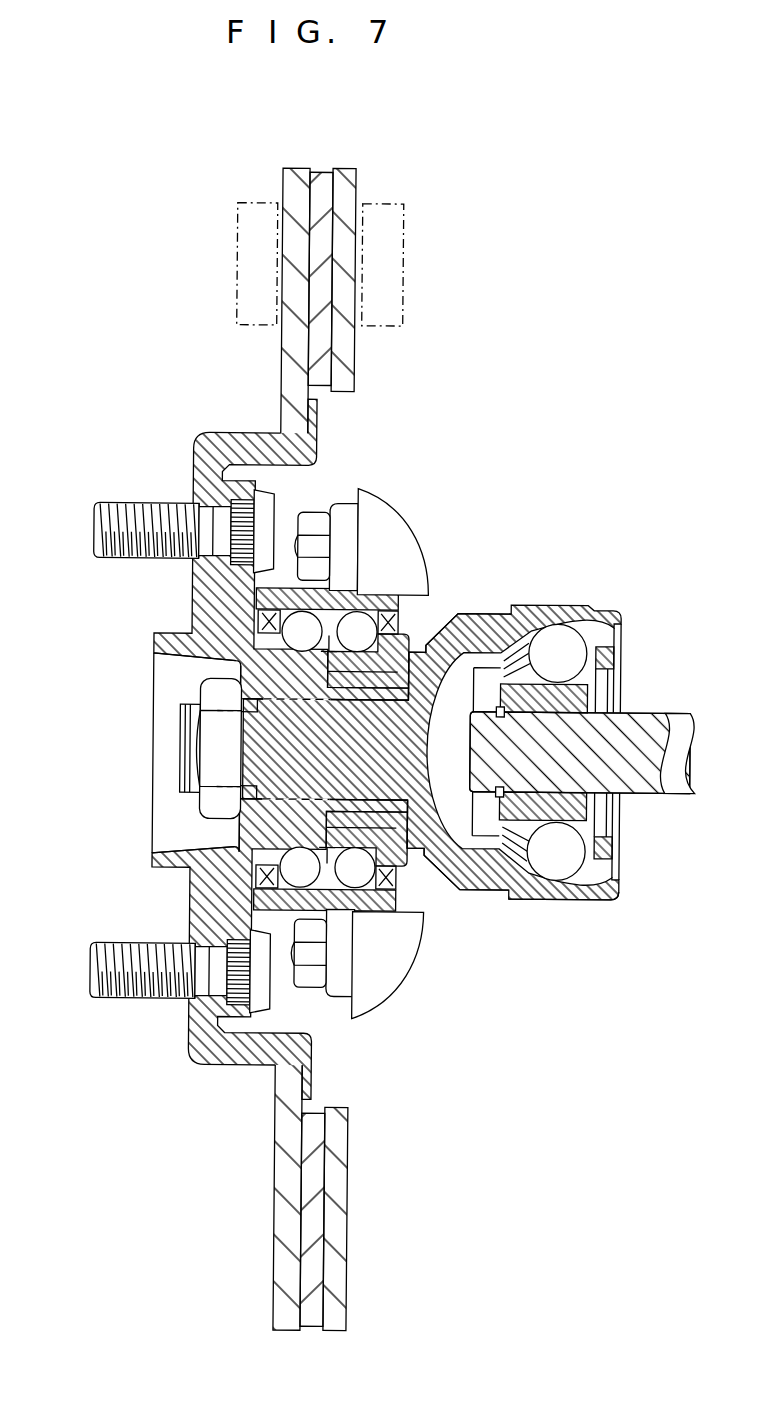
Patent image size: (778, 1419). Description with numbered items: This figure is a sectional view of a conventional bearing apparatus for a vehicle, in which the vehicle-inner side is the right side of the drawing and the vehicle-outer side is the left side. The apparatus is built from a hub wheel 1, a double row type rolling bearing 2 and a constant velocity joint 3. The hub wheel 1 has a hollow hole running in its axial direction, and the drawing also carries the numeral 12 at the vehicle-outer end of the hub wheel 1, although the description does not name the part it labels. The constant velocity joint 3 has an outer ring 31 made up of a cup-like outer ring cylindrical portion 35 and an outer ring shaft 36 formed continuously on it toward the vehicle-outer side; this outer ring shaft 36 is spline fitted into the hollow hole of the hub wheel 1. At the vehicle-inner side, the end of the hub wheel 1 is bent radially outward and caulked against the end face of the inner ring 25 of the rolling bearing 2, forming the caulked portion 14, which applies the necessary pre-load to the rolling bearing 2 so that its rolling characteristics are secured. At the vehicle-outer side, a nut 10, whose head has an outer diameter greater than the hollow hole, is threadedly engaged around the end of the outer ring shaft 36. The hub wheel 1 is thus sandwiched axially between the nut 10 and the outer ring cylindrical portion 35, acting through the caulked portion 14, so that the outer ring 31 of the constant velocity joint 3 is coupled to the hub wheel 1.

The hub wheel 1 is at (150, 872).
The double row type rolling bearing 2 is at (284, 580).
The constant velocity joint 3 is at (559, 600).
The nut 10 is at (205, 801).
The recess of hub wheel 12 is at (230, 664).
The caulked portion 14 is at (407, 647).
The inner ring 25 is at (398, 656).
The outer ring 31 is at (606, 606).
The outer ring cylindrical portion 35 is at (554, 893).
The outer ring shaft 36 is at (383, 774).